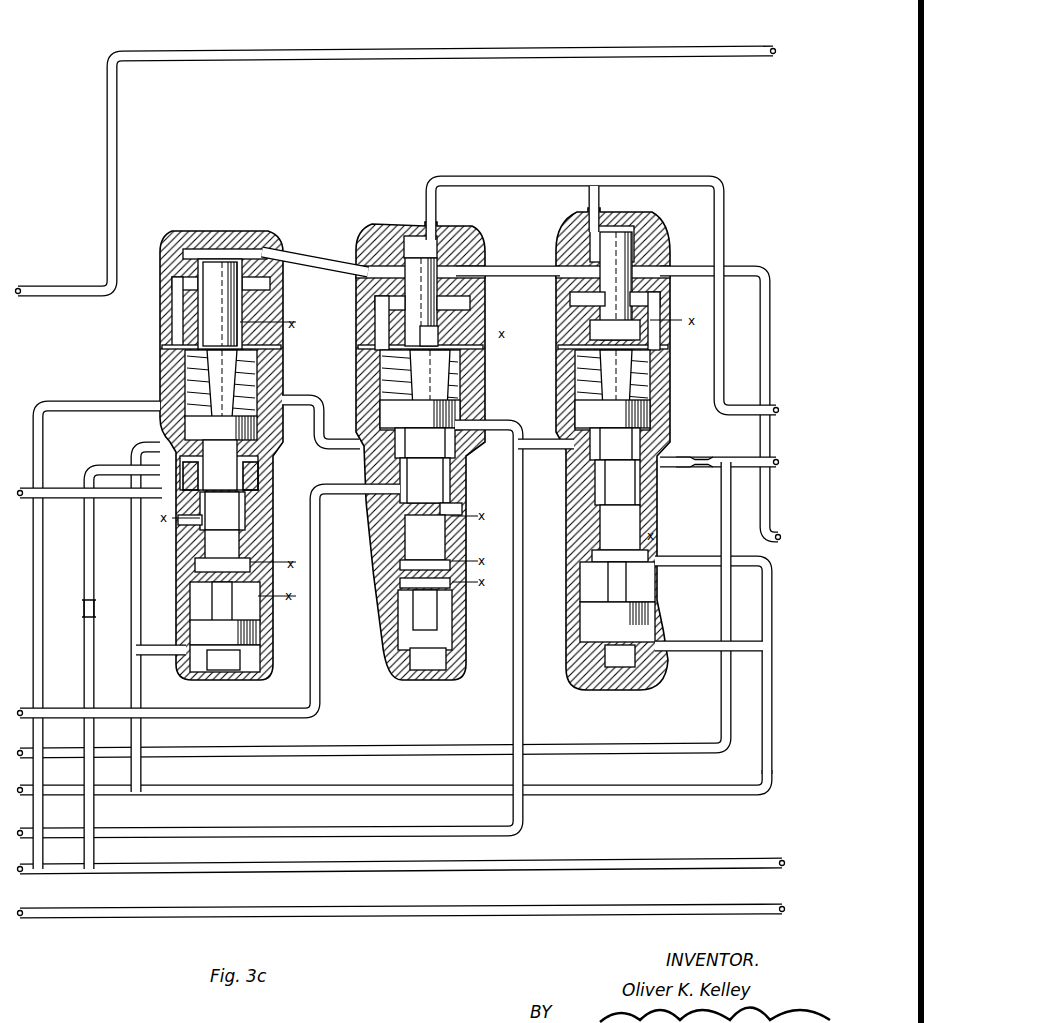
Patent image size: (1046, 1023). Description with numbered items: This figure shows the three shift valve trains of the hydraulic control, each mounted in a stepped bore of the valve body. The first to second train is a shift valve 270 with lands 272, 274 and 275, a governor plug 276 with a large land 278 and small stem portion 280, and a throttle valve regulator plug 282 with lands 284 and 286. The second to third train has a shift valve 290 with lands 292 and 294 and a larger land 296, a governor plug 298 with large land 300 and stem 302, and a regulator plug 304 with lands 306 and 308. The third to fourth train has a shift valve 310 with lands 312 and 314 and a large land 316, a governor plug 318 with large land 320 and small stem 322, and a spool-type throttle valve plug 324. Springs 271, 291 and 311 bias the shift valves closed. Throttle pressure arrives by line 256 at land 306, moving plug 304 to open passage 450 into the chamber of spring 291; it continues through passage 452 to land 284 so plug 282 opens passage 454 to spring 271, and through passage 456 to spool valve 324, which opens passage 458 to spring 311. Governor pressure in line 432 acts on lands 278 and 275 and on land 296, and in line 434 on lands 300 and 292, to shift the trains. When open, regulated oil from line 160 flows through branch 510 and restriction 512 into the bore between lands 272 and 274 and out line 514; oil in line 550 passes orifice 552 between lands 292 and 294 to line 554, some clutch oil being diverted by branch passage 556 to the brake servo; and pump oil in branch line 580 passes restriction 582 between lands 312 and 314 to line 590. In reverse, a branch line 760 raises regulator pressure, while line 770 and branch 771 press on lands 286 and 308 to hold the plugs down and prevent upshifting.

The line 160 is at (50, 875).
The line 256 is at (748, 537).
The shift valve 270 is at (440, 482).
The spring 271 is at (455, 368).
The land 272 is at (440, 542).
The land 274 is at (445, 453).
The land 275 is at (455, 414).
The governor plug 276 is at (437, 615).
The large land 278 is at (405, 668).
The small stem portion 280 is at (412, 598).
The throttle valve regulator plug 282 is at (440, 337).
The land 284 is at (455, 316).
The land 286 is at (437, 238).
The shift valve 290 is at (605, 500).
The spring 291 is at (645, 383).
The land 292 is at (605, 540).
The land 294 is at (600, 470).
The large land 296 is at (590, 418).
The governor plug 298 is at (640, 655).
The large land 300 is at (585, 628).
The small stem portion 302 is at (615, 597).
The throttle valve regulator plug 304 is at (598, 332).
The land 306 is at (590, 298).
The land 308 is at (640, 245).
The shift valve 310 is at (242, 509).
The spring 311 is at (250, 372).
The land 312 is at (238, 546).
The land 314 is at (238, 471).
The large land 316 is at (250, 428).
The governor plug 318 is at (250, 653).
The large land 320 is at (255, 630).
The small stem 322 is at (212, 596).
The throttle valve plug 324 is at (236, 298).
The line 432 is at (80, 828).
The line 434 is at (80, 788).
The passage 450 is at (652, 307).
The passage 452 is at (513, 266).
The passage 454 is at (378, 328).
The passage 456 is at (316, 258).
The passage 458 is at (172, 318).
The branch 510 is at (40, 620).
The restriction 512 is at (326, 440).
The line 514 is at (337, 494).
The line 550 is at (745, 458).
The orifice 552 is at (705, 457).
The line 554 is at (722, 495).
The branch passage 556 is at (745, 48).
The branch line 580 is at (90, 658).
The restriction 582 is at (94, 612).
The line 590 is at (72, 490).
The branch line 760 is at (54, 919).
The line 770 is at (425, 210).
The branch 771 is at (600, 185).